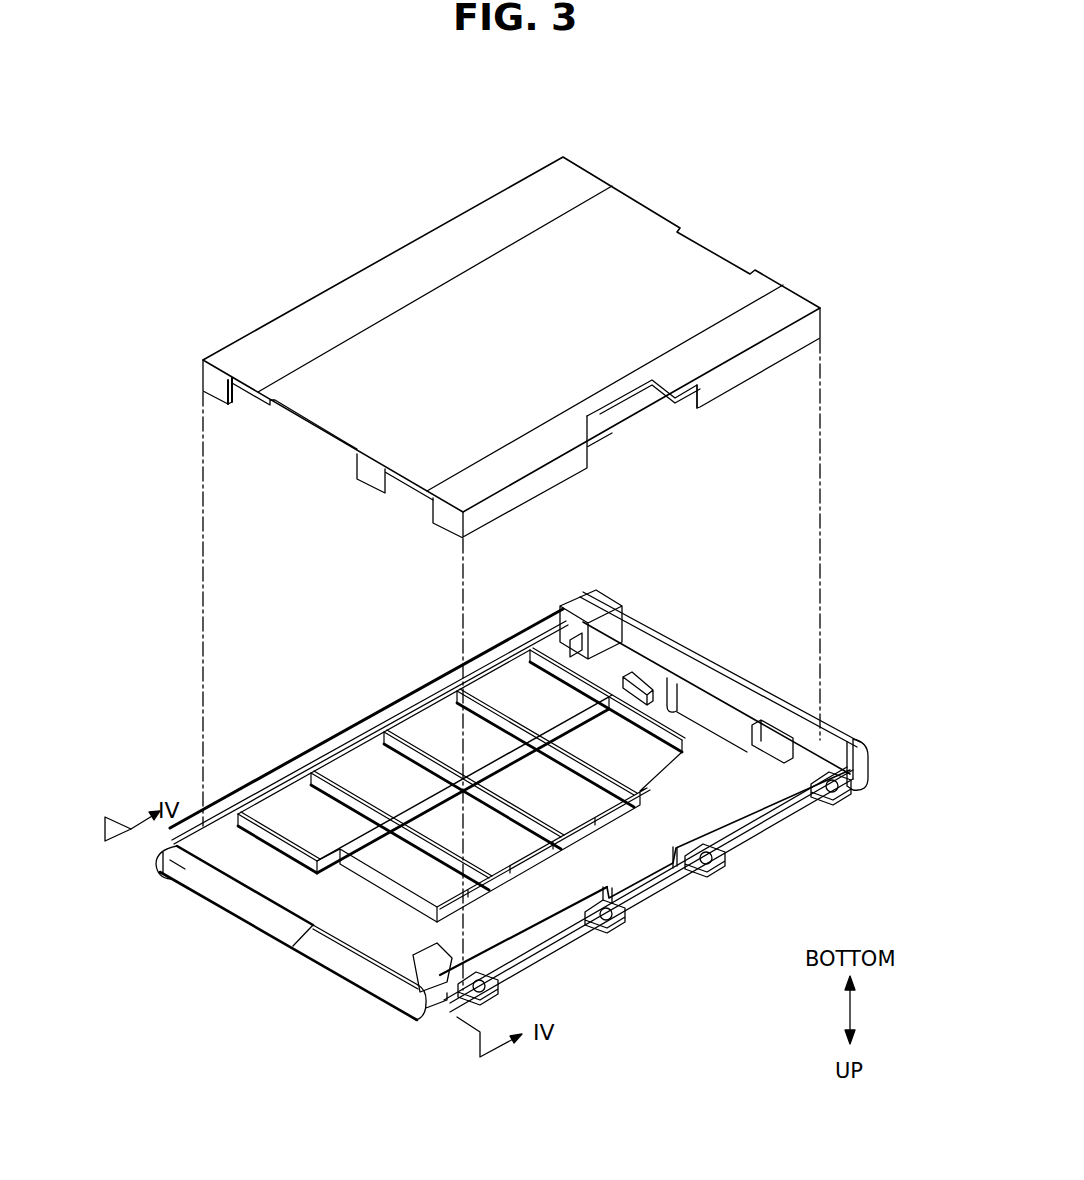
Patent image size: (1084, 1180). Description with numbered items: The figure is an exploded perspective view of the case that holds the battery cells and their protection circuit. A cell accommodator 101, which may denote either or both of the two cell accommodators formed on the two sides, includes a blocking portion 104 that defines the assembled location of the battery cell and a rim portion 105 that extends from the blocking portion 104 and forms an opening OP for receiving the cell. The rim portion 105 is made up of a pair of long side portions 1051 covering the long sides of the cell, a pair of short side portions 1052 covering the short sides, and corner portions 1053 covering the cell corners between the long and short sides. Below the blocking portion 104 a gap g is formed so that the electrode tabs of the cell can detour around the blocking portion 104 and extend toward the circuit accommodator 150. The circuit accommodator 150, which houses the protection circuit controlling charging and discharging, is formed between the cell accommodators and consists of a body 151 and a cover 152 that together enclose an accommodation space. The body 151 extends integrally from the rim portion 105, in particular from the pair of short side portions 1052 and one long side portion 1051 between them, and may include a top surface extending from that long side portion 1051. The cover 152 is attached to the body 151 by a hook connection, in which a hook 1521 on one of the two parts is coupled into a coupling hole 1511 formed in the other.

The circuit accommodator 150 is at (267, 521).
The cover 152 is at (307, 418).
The hook 1521 is at (226, 405).
The body 151 is at (322, 742).
The coupling hole 1511 is at (566, 633).
The blocking portion 104 is at (645, 676).
The rim portion 105 is at (686, 656).
The long side portion 1051 is at (238, 920).
The short side portion 1052 is at (160, 845).
The corner portion 1053 is at (178, 864).
The cell accommodator 101 is at (410, 975).
The gap g is at (680, 712).
The opening OP is at (381, 978).